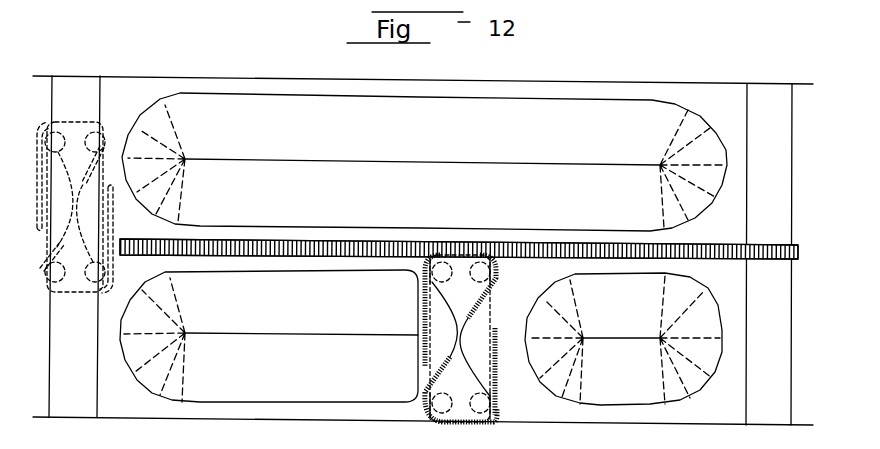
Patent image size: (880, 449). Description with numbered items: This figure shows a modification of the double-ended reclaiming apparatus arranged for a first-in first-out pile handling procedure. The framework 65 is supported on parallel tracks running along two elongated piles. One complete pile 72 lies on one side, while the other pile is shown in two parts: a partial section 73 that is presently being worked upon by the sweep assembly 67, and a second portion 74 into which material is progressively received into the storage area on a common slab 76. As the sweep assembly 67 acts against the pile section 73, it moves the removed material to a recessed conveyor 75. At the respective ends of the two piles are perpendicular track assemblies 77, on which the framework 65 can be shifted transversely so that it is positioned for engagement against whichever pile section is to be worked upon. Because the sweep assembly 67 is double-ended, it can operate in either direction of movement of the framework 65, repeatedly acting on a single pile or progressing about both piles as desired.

The framework 65 is at (466, 350).
The sweep assembly 67 is at (426, 310).
The complete pile 72 is at (413, 153).
The partial section of the other pile 73 is at (269, 336).
The second portion of the pile 74 is at (625, 322).
The recessed conveyor 75 is at (550, 258).
The common slab 76 is at (528, 412).
The perpendicular track assemblies 77 is at (97, 357).